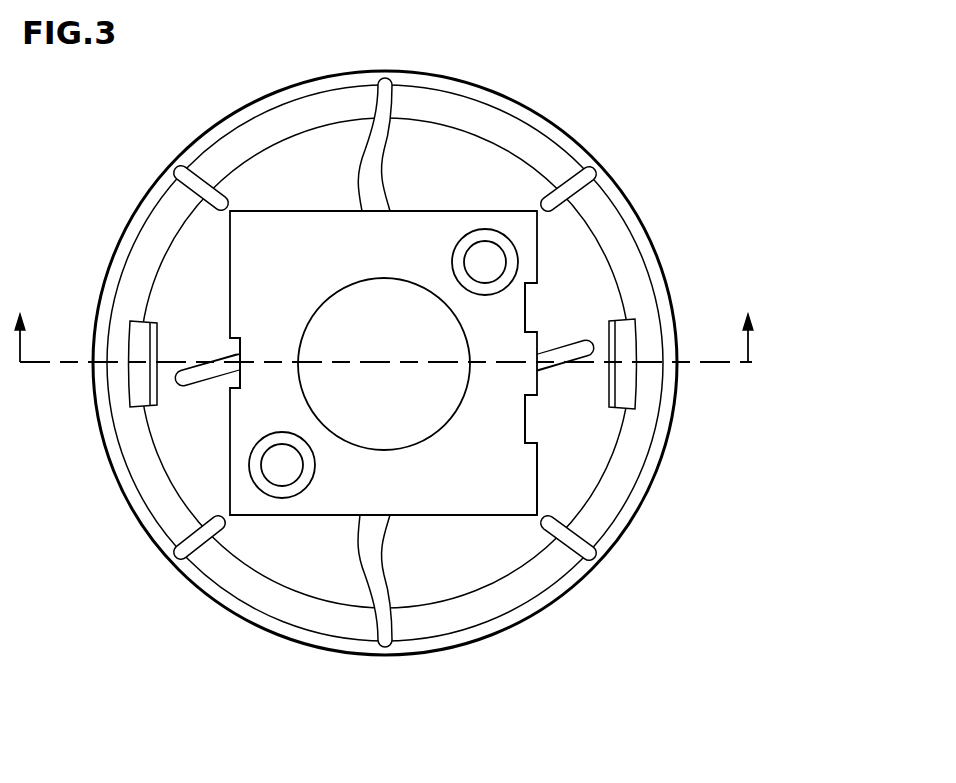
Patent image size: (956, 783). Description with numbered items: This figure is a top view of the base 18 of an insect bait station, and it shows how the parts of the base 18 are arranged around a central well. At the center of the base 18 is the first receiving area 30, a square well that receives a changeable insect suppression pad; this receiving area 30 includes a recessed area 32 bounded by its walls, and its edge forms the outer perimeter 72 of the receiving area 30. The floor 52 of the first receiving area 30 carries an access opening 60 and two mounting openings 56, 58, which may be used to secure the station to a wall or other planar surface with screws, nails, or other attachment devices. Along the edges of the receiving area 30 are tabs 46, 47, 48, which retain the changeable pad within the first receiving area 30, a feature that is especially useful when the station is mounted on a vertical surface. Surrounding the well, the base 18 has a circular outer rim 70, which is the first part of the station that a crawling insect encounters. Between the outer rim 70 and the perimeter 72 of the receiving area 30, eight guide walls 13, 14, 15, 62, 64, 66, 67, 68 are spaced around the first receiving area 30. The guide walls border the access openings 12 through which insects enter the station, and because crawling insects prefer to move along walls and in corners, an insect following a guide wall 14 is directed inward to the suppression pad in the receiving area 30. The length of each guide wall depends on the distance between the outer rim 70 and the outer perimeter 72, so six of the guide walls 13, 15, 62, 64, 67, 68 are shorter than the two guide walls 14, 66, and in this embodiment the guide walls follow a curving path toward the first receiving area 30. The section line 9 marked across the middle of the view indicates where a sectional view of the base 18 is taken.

The section line 9- 9 is at (382, 323).
The access openings 12 is at (420, 135).
The guide wall 13 is at (180, 548).
The guide wall 14 is at (383, 643).
The guide wall 15 is at (590, 550).
The base 18 is at (633, 211).
The first receiving area 30 is at (477, 213).
The recessed area 32 is at (448, 218).
The tab 46 is at (243, 340).
The tab 47 is at (525, 309).
The tab 48 is at (525, 413).
The floor 52 is at (325, 222).
The mounting opening 56 is at (453, 257).
The mounting opening 58 is at (310, 479).
The access opening 60 is at (364, 281).
The guide wall 62 is at (192, 382).
The guide wall 64 is at (178, 170).
The guide wall 66 is at (378, 86).
The guide wall 67 is at (588, 175).
The guide wall 68 is at (579, 343).
The outer rim 70 is at (679, 388).
The outer perimeter 72 is at (538, 467).